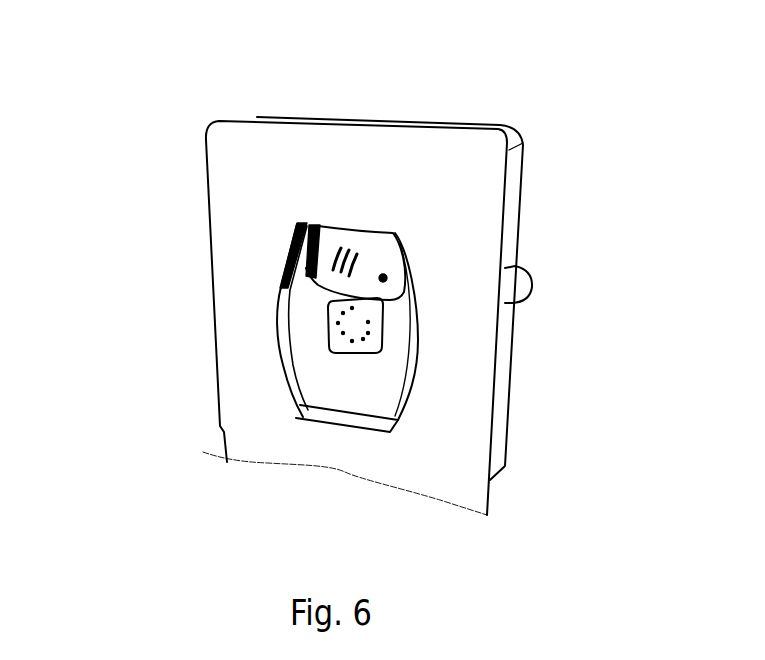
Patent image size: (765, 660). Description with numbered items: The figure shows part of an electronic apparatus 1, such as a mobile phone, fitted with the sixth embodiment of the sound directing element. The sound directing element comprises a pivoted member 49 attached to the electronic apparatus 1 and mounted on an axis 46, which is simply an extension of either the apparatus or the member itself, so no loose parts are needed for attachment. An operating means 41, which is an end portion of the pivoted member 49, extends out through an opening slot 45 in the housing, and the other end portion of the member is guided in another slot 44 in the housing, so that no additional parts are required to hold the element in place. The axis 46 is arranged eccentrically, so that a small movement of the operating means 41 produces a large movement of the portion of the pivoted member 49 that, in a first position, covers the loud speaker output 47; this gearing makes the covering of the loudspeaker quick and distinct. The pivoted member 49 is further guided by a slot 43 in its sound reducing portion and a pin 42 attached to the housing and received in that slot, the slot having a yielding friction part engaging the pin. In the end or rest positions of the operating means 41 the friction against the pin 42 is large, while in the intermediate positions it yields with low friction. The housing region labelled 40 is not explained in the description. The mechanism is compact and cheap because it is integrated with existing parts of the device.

The electronic apparatus 1 is at (592, 112).
The housing 40 is at (220, 202).
The operating means 41 is at (522, 292).
The pin 42 is at (293, 352).
The slot 43 is at (330, 232).
The slot 44 is at (295, 310).
The opening slot 45 is at (507, 241).
The axis 46 is at (383, 282).
The loud speaker output 47 is at (337, 338).
The pivoted member 49 is at (398, 240).